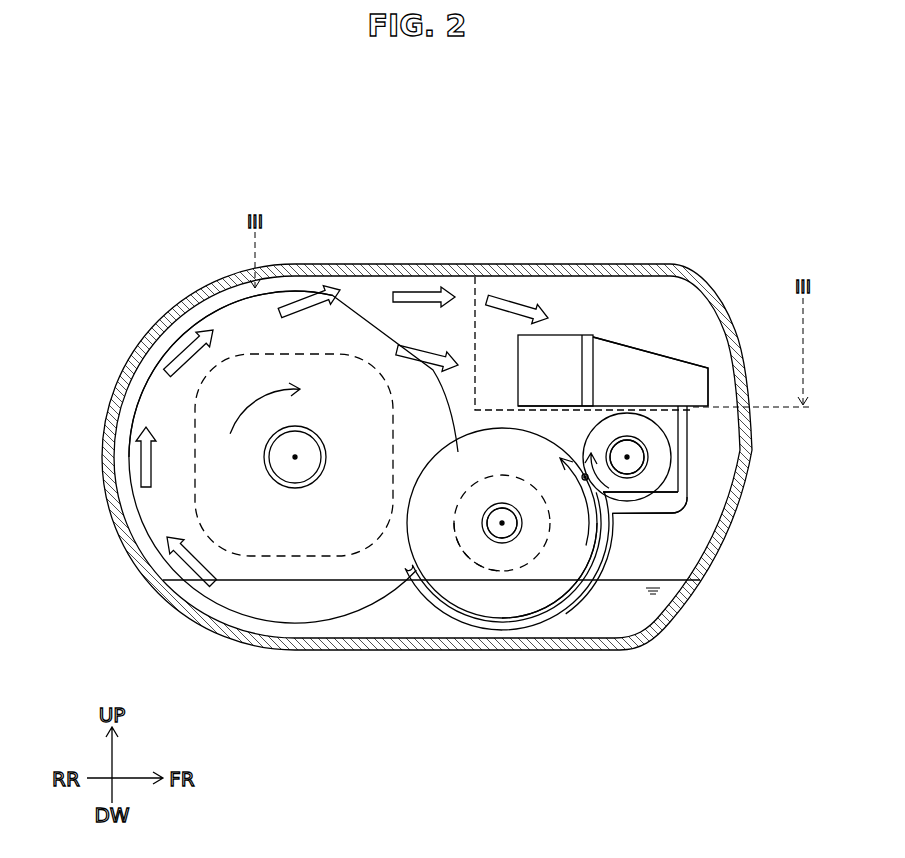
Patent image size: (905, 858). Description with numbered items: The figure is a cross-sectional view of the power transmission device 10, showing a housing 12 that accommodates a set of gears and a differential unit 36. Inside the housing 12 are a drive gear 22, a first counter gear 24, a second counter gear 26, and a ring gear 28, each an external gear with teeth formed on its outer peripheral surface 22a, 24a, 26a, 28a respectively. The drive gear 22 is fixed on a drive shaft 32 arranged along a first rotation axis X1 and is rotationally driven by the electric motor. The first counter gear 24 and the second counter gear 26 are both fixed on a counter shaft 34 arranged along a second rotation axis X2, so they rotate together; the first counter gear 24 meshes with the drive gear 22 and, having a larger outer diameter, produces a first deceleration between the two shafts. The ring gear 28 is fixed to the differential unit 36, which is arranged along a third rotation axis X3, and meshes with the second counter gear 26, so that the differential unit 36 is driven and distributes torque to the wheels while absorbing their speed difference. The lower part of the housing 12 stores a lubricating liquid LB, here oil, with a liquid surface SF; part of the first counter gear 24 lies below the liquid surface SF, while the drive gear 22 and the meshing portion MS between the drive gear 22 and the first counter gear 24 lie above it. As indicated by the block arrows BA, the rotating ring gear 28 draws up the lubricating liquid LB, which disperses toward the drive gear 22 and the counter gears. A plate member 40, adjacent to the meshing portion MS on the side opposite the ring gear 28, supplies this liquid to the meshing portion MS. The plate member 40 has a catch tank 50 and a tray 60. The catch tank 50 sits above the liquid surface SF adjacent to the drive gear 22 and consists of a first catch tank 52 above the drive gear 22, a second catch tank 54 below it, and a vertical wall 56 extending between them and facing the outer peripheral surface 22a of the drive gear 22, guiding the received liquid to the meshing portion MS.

The power transmission device 10 is at (729, 218).
The housing 12 is at (471, 280).
The drive gear 22 is at (648, 464).
The outer peripheral surface 22a is at (660, 445).
The first counter gear 24 is at (565, 592).
The outer peripheral surface 24a is at (543, 583).
The second counter gear 26 is at (488, 573).
The outer peripheral surface 26a is at (460, 563).
The ring gear 28 is at (162, 407).
The outer peripheral surface 28a is at (148, 375).
The drive shaft 32 is at (690, 505).
The counter shaft 34 is at (516, 542).
The differential unit 36 is at (190, 487).
The plate member 40 is at (622, 302).
The catch tank 50 is at (668, 335).
The first catch tank 52 is at (673, 370).
The second catch tank 54 is at (663, 502).
The vertical wall 56 is at (690, 420).
The tray 60 is at (588, 590).
The block arrows BA is at (192, 335).
The meshing portion MS is at (585, 477).
The liquid surface SF is at (672, 580).
The lubricating liquid LB is at (660, 615).
The first rotation axis X1 is at (629, 459).
The second rotation axis X2 is at (502, 527).
The third rotation axis X3 is at (295, 457).